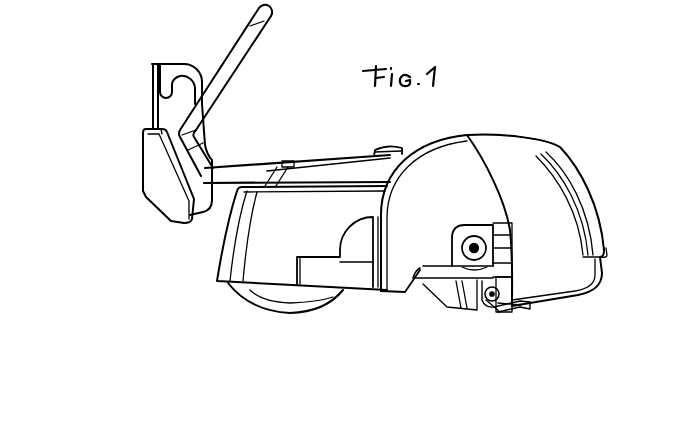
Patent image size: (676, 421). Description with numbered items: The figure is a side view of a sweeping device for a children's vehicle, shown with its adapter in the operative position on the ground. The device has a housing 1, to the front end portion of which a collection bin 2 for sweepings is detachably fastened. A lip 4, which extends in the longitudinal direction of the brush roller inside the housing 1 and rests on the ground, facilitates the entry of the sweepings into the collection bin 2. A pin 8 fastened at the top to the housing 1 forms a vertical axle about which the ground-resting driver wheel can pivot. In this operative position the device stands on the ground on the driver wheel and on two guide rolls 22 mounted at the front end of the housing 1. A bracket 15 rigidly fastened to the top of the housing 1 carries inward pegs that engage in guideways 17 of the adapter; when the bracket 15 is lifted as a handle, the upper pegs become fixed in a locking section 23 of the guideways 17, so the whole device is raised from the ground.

The housing 1 is at (337, 154).
The collection bin 2 is at (548, 190).
The lip 4 is at (494, 309).
The pin 8 is at (384, 148).
The bracket 15 is at (226, 70).
The guideways 17 is at (184, 66).
The guide rolls 22 is at (492, 308).
The locking section 23 is at (166, 88).